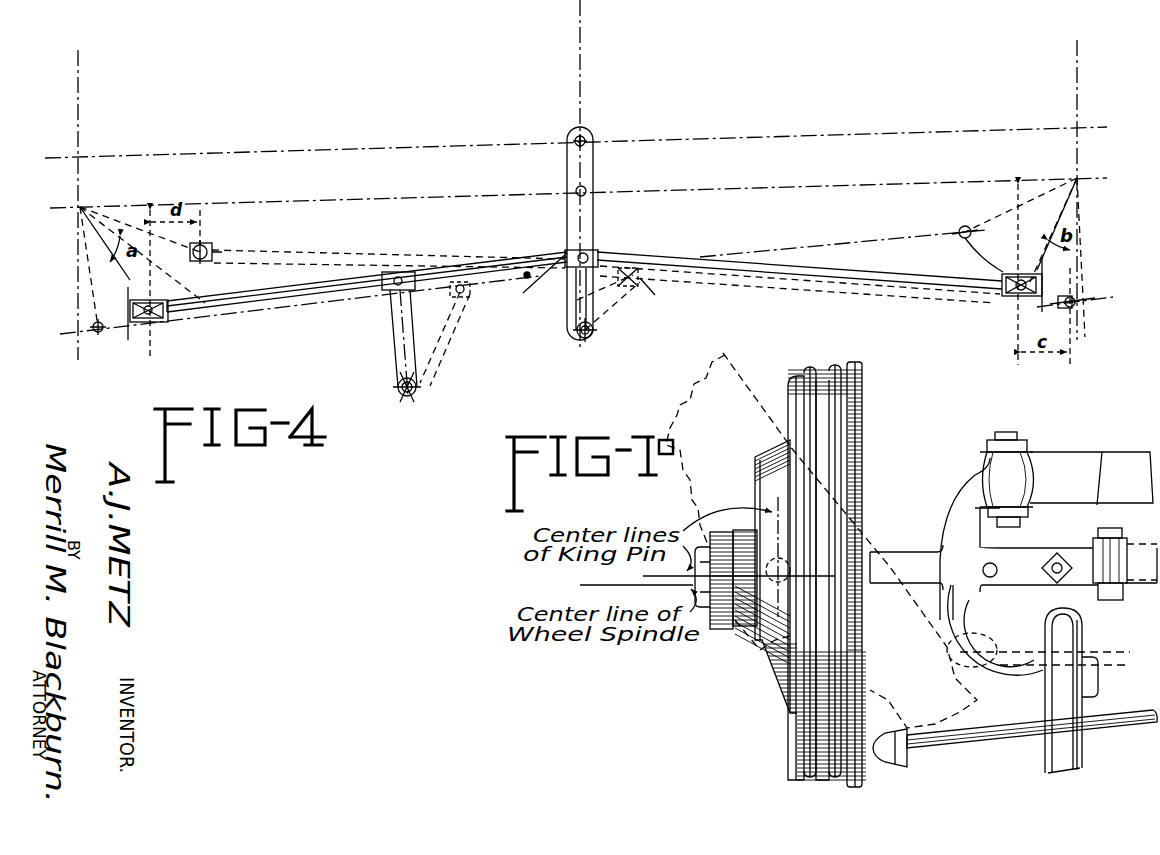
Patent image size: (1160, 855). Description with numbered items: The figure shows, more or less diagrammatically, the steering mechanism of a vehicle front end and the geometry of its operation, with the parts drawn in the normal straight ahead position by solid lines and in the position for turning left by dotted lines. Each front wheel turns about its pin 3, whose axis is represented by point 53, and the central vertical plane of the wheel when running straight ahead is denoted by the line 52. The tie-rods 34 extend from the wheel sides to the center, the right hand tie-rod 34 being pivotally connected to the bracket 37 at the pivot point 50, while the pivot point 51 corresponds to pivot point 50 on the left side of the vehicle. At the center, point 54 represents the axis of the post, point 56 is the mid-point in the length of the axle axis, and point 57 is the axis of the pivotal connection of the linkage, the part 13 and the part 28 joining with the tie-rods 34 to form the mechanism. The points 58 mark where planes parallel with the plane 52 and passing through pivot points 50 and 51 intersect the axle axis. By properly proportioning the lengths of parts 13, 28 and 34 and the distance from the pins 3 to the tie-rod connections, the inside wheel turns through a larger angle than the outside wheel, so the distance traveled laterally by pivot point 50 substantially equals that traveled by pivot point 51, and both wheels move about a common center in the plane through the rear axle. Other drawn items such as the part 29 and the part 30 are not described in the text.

In FIG. 4, the central vertical plane of the wheel 52 is at (77, 99).
In FIG. 4, the axis of pin 53 is at (83, 206).
In FIG. 4, the points in the axis of the axle 58 is at (592, 260).
In FIG. 4, the tie-rod 34 is at (296, 268).
In FIG. 4, the pivot point 51 is at (160, 320).
In FIG. 4, the bracket 37 is at (150, 320).
In FIG. 4, the pivot point 50 is at (1018, 292).
In FIG. 4, the axis of post 54 is at (600, 252).
In FIG. 4, the steering mechanism part 13 is at (590, 218).
In FIG. 4, the mid-point of the axle axis 56 is at (600, 190).
In FIG. 4, the axis of pivotal connection 57 is at (598, 328).
In FIG. 4, the steering mechanism part 28 is at (580, 300).
In FIG. 4, the drag link pivot 29 is at (528, 260).
In FIG. 4, the pitman arm 30 is at (332, 303).
In FIG. 1a, the pin 3 is at (1053, 661).